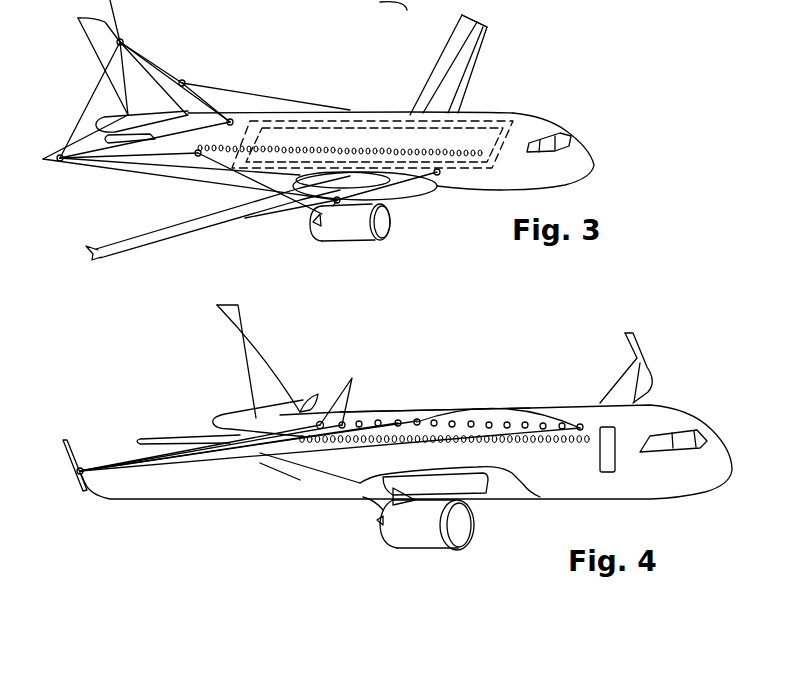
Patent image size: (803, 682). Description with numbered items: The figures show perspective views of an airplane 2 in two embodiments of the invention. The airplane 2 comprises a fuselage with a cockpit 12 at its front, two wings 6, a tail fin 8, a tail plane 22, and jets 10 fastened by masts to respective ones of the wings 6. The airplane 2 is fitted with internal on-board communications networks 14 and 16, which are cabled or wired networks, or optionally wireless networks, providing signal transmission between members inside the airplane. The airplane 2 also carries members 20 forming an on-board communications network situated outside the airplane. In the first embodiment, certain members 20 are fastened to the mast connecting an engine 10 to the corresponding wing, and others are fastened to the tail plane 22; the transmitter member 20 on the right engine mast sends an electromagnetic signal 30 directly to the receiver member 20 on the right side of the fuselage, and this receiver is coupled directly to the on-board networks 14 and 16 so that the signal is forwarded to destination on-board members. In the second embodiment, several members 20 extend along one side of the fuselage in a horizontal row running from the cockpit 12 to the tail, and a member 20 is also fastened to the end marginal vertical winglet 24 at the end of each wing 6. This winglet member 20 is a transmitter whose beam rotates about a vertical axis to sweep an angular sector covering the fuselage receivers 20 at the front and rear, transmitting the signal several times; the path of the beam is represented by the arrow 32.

In FIG. 3, the airplane 2 is at (597, 0).
In FIG. 4, the airplane 2 is at (692, 373).
In FIG. 3, the wings 6 is at (263, 208).
In FIG. 4, the wings 6 is at (245, 497).
In FIG. 3, the tail fin 8 is at (103, 42).
In FIG. 4, the tail fin 8 is at (250, 370).
In FIG. 3, the jets 10 is at (358, 237).
In FIG. 4, the jets 10 is at (420, 523).
In FIG. 3, the cockpit 12 is at (572, 137).
In FIG. 4, the cockpit 12 is at (653, 449).
In FIG. 3, the internal on-board communications network 14 is at (493, 123).
In FIG. 3, the internal on-board communications network 16 is at (513, 127).
In FIG. 3, the members 20 is at (182, 83).
In FIG. 4, the members 20 is at (79, 477).
In FIG. 3, the tail plane 22 is at (115, 143).
In FIG. 4, the end marginal vertical winglet 24 is at (72, 464).
In FIG. 3, the electromagnetic signal 30 is at (233, 183).
In FIG. 4, the electromagnetic signal 30 is at (165, 467).
In FIG. 4, the arrow 32 is at (407, 407).